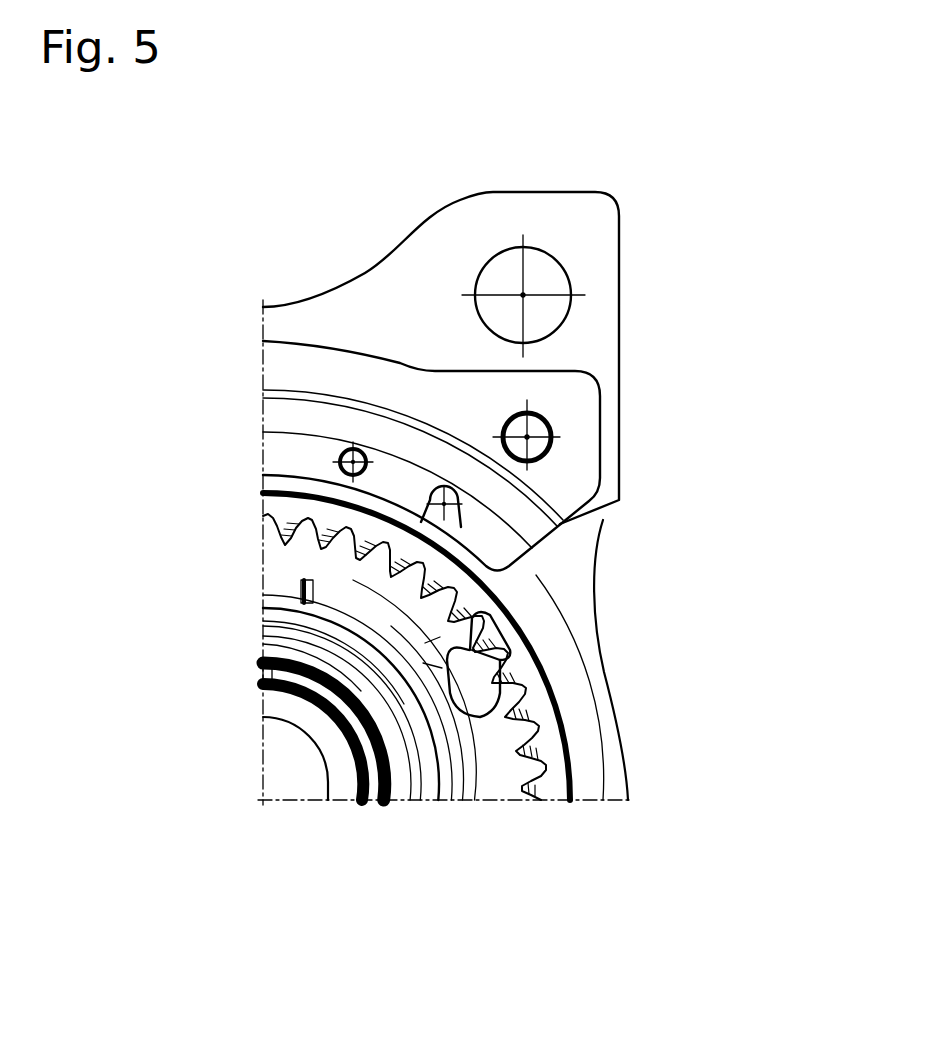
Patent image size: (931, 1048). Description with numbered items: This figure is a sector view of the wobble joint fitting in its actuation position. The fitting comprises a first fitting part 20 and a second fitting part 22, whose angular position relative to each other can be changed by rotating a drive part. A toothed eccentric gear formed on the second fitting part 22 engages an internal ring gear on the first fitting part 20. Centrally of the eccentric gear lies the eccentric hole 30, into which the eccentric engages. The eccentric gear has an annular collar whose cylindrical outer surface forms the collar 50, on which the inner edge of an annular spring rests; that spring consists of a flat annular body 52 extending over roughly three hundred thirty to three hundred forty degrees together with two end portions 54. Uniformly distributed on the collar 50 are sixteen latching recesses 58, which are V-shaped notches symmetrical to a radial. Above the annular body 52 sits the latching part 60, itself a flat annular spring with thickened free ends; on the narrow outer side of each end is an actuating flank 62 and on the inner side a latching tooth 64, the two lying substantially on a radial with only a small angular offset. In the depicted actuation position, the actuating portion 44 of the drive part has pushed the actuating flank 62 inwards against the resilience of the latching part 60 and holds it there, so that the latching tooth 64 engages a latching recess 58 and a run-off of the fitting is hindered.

The first fitting part 20 is at (587, 233).
The second fitting part 22 is at (573, 682).
The eccentric hole 30 is at (440, 745).
The actuating portion 44 is at (452, 628).
The collar 50 is at (289, 591).
The annular body 52 is at (343, 585).
The end portions 54 is at (300, 585).
The latching recess 58 is at (442, 722).
The latching part 60 is at (448, 630).
The actuating flank 62 is at (474, 651).
The latching tooth 64 is at (435, 617).